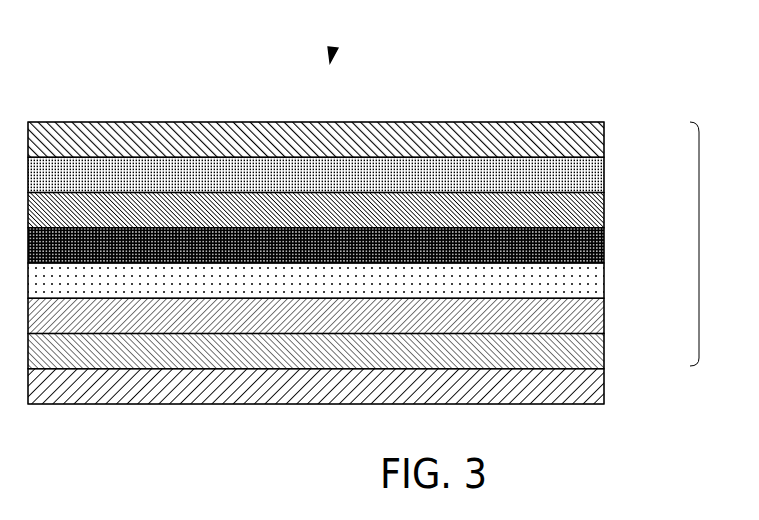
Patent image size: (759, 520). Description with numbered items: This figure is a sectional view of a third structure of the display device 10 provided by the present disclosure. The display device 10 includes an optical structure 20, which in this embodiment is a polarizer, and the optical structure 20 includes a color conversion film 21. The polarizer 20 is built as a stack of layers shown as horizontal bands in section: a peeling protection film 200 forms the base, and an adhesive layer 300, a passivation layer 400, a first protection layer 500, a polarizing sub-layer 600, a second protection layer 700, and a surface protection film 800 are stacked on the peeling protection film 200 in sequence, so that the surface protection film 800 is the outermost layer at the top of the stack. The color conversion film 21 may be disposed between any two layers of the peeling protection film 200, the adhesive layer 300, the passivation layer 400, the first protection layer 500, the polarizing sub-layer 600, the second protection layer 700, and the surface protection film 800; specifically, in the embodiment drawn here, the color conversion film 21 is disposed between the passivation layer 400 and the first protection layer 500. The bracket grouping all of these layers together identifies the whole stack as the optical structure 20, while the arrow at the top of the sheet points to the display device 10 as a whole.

The display device 10 is at (334, 50).
The optical structure 20 is at (699, 250).
The surface protection film 800 is at (604, 126).
The second protection layer 700 is at (604, 163).
The polarizing sub-layer 600 is at (604, 197).
The first protection layer 500 is at (604, 232).
The color conversion film 21 is at (568, 292).
The passivation layer 400 is at (604, 312).
The adhesive layer 300 is at (604, 339).
The peeling protection film 200 is at (574, 393).